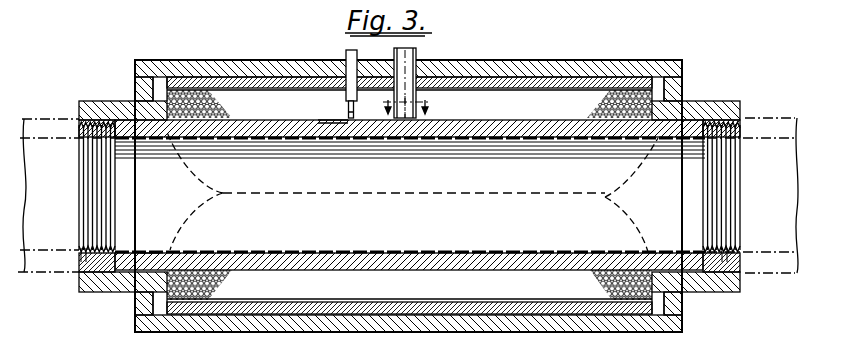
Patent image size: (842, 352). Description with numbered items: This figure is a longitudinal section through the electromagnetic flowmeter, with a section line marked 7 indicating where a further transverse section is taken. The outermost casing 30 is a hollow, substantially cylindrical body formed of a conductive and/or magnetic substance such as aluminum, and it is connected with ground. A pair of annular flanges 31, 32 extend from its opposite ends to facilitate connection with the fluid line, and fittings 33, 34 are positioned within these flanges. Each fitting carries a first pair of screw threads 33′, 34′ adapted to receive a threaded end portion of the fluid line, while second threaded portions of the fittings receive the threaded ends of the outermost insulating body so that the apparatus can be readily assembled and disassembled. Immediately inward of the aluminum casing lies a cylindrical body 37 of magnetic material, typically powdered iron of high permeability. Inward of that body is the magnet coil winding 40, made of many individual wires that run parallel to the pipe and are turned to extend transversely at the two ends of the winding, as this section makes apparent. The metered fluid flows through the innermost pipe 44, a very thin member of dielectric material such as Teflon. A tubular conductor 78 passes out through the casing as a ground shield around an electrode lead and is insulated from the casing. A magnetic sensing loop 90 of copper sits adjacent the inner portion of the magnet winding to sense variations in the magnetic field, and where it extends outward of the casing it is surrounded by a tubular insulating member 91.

The outermost casing 30 is at (657, 56).
The annular flange 31 is at (103, 101).
The annular flange 32 is at (726, 101).
The fitting 33 is at (118, 141).
The screw threads 33′ is at (88, 262).
The fitting 34 is at (690, 118).
The screw threads 34′ is at (727, 263).
The cylindrical body 37 is at (546, 77).
The magnet coil winding 40 is at (193, 90).
The innermost pipe 44 is at (415, 252).
The tubular conductor 78 is at (417, 53).
The magnetic sensing loop 90 is at (318, 121).
The tubular insulating member 91 is at (346, 53).
The section line 7- 7 is at (406, 106).